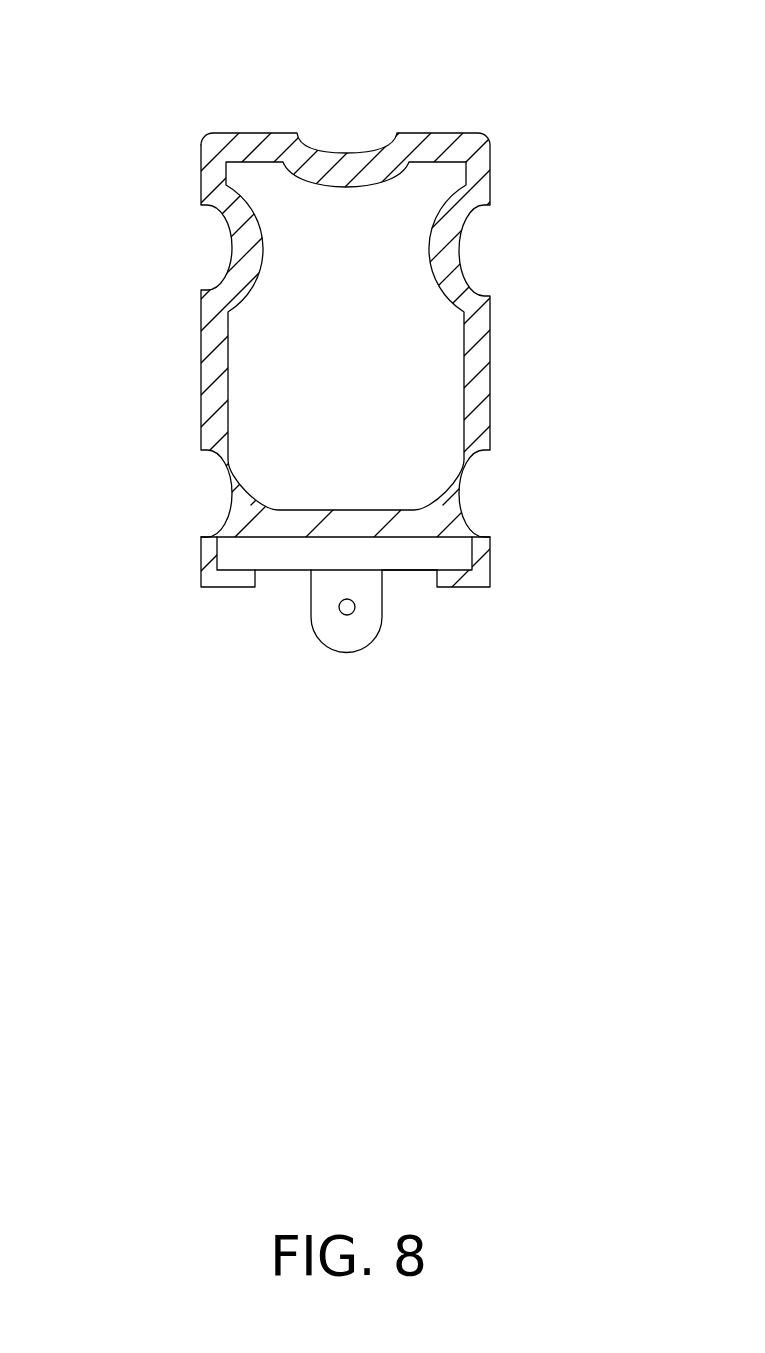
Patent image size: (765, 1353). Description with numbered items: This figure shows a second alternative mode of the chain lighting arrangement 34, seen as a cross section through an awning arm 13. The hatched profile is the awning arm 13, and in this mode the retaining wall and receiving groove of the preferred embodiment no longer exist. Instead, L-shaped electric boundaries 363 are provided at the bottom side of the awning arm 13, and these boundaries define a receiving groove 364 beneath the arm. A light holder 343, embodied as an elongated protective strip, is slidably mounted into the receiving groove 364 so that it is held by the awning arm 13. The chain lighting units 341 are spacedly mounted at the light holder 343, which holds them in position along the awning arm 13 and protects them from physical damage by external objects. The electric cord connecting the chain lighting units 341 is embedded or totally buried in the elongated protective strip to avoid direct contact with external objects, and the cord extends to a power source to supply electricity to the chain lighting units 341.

The chain lighting arrangement 34 is at (382, 427).
The awning arm 13 is at (490, 300).
The chain lighting unit 341 is at (343, 637).
The light holder 343 is at (281, 555).
The L-shaped electric boundary 363 is at (205, 587).
The receiving groove 364 is at (417, 573).